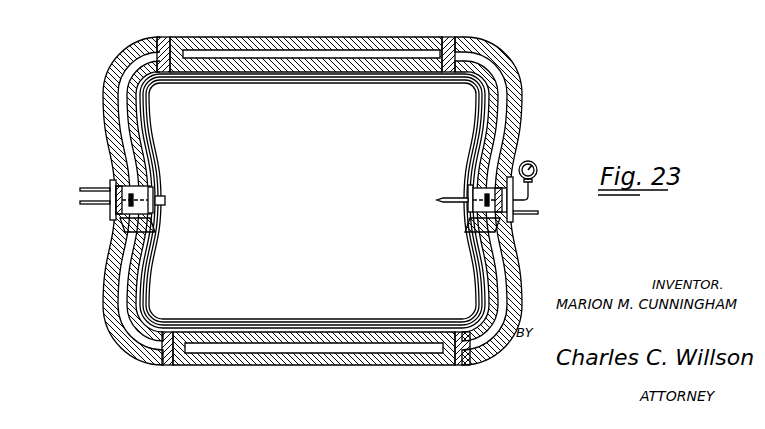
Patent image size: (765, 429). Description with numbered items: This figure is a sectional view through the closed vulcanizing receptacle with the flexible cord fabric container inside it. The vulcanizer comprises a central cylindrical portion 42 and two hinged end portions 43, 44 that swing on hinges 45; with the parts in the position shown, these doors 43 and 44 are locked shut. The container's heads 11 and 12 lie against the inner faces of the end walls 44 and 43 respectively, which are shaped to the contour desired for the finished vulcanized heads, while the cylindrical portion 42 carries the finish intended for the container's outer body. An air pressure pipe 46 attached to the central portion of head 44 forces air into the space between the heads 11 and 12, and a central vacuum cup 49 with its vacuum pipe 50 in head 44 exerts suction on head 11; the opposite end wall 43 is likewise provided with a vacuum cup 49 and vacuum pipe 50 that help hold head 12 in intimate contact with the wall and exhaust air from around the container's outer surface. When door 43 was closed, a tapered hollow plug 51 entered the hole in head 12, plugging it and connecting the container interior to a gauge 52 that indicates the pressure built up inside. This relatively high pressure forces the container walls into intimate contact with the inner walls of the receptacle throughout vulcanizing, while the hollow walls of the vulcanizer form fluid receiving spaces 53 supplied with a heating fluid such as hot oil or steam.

The head 11 is at (164, 140).
The head 12 is at (466, 132).
The central cylindrical portion 42 is at (340, 40).
The hinged end portion 43 is at (498, 55).
The hinged end portion 44 is at (113, 67).
The hinges 45 is at (168, 34).
The air pressure pipe 46 is at (82, 203).
The vacuum cup 49 is at (133, 219).
The vacuum pipe 50 is at (92, 188).
The tapered hollow plug 51 is at (450, 196).
The gauge 52 is at (533, 161).
The fluid receiving spaces 53 is at (233, 57).